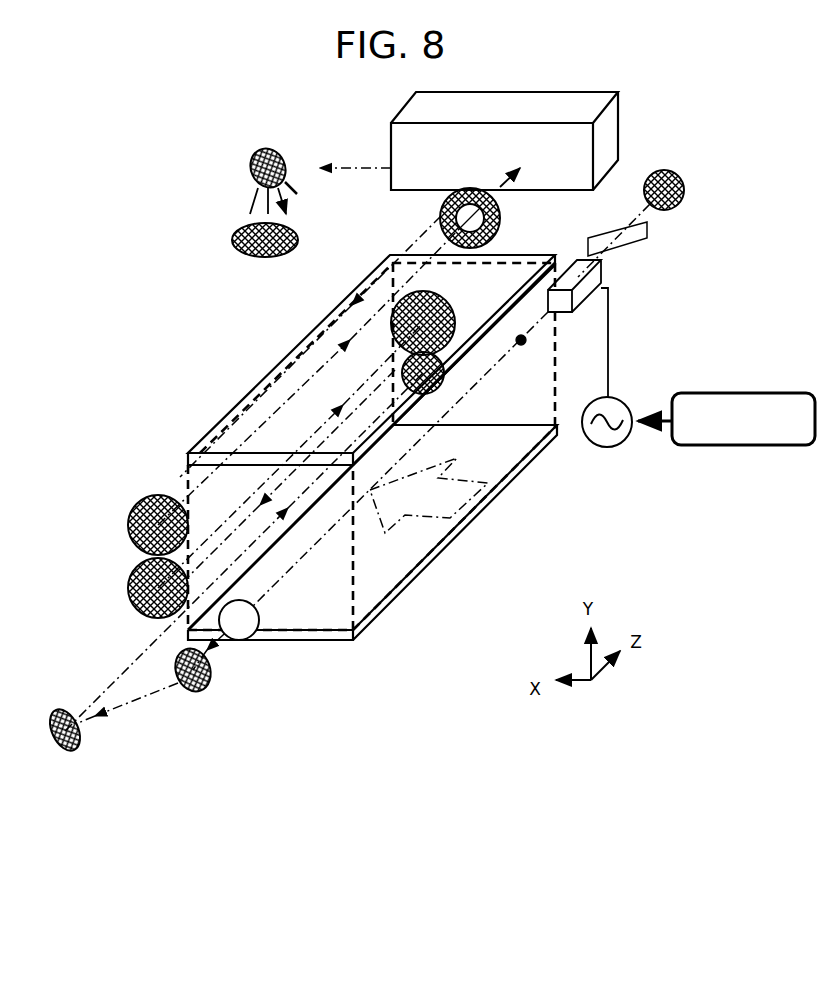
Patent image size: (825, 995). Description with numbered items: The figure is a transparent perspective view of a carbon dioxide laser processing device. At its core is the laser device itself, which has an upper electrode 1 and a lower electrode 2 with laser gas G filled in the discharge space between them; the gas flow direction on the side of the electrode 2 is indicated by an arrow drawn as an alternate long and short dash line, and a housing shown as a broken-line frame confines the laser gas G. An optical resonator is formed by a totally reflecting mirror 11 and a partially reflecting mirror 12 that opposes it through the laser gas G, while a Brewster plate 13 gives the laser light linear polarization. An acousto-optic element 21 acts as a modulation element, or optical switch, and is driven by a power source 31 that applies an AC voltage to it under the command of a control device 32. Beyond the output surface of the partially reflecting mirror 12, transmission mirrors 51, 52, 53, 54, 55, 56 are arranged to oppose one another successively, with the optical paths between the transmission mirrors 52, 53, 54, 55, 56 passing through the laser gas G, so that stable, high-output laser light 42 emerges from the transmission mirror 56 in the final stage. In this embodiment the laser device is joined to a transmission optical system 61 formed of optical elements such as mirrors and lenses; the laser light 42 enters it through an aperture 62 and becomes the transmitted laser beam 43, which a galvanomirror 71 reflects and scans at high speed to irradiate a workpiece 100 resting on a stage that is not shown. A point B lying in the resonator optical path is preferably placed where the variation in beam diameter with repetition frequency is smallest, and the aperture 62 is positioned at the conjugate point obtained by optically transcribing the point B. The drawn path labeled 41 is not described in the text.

The electrode 1 is at (368, 280).
The electrode 2 is at (408, 590).
The totally reflecting mirror 11 is at (686, 194).
The partially reflecting mirror 12 is at (247, 638).
The Brewster plate 13 is at (650, 234).
The acousto-optic element 21 is at (605, 282).
The power source 31 is at (605, 447).
The control device 32 is at (758, 392).
The light beam 41 is at (143, 705).
The laser light 42 is at (441, 244).
The laser beam 43 is at (333, 165).
The transmission mirror 51 is at (203, 688).
The transmission mirror 52 is at (70, 752).
The transmission mirror 53 is at (404, 373).
The transmission mirror 54 is at (128, 600).
The transmission mirror 55 is at (395, 315).
The transmission mirror 56 is at (128, 540).
The transmission optical system 61 is at (620, 128).
The aperture 62 is at (503, 216).
The galvanomirror 71 is at (252, 158).
The workpiece 100 is at (232, 238).
The point B is at (521, 340).
The laser gas G is at (472, 520).